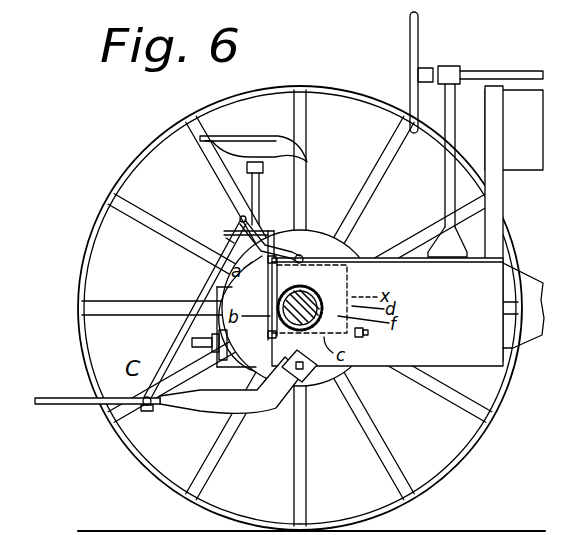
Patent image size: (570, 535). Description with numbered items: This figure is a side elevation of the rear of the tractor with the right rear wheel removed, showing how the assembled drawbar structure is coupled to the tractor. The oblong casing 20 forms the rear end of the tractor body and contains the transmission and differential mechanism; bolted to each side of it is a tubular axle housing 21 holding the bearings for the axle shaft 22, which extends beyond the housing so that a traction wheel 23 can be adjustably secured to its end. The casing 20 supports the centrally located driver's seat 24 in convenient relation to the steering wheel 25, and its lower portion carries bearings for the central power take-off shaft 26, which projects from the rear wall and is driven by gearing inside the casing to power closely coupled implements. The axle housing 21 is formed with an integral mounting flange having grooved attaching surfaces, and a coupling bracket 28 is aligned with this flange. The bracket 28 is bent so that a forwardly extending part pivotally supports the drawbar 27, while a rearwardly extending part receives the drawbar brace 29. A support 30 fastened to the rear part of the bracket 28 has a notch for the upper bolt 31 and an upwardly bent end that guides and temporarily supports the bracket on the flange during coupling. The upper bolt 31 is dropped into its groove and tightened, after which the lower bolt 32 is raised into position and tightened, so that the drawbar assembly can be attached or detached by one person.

The oblong casing 20 is at (448, 360).
The tubular axle housing 21 is at (330, 293).
The axle shaft 22 is at (300, 298).
The traction wheel 23 is at (118, 433).
The driver's seat 24 is at (228, 140).
The steering wheel 25 is at (410, 22).
The power take-off shaft 26 is at (192, 343).
The drawbar 27 is at (77, 398).
The coupling bracket 28 is at (257, 296).
The drawbar brace 29 is at (214, 272).
The support 30 is at (246, 264).
The upper bolt 31 is at (306, 256).
The lower bolt 32 is at (366, 333).